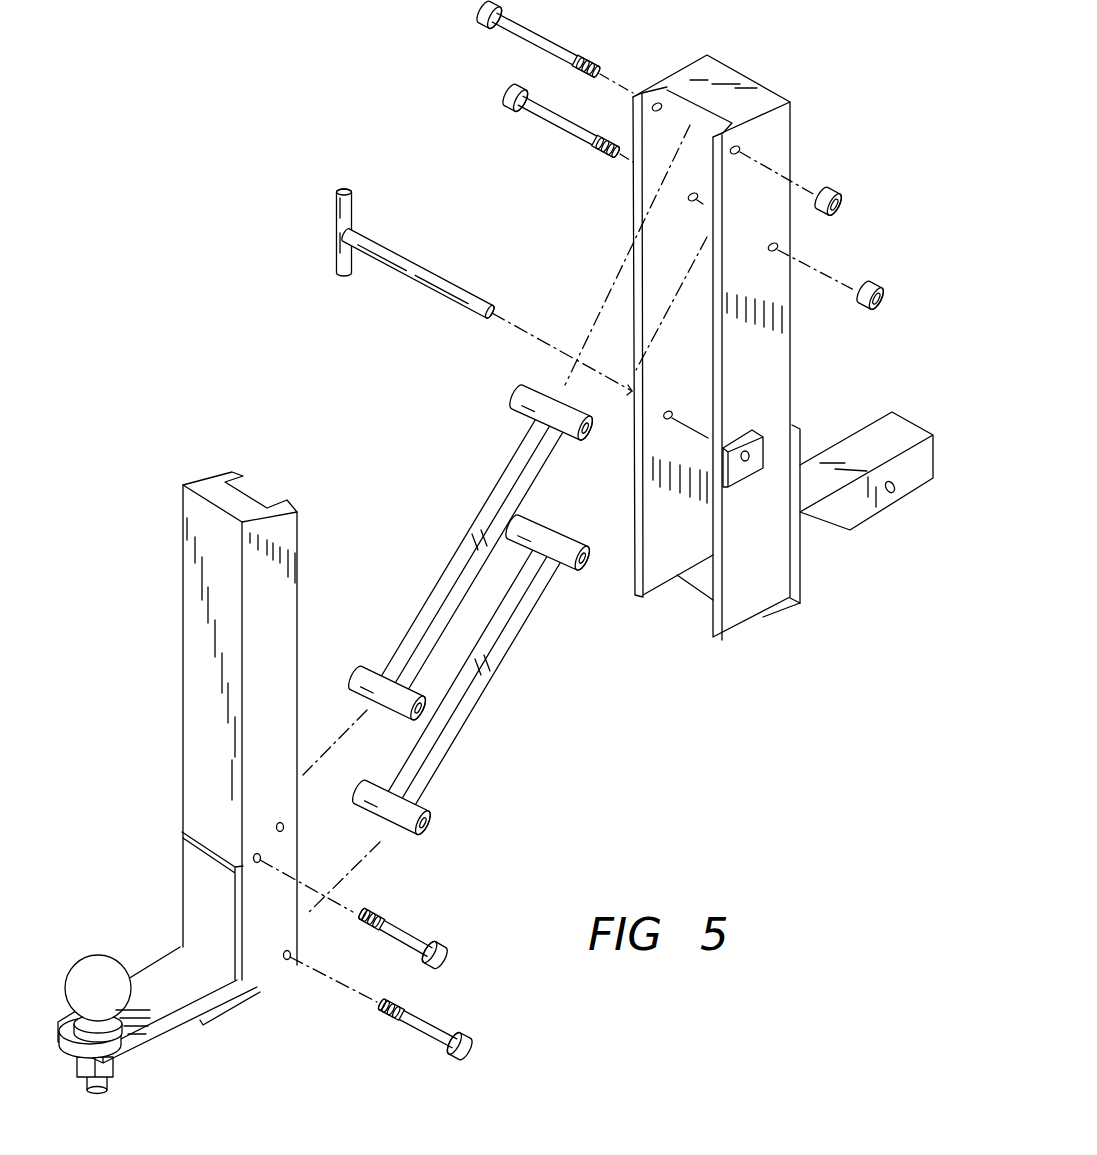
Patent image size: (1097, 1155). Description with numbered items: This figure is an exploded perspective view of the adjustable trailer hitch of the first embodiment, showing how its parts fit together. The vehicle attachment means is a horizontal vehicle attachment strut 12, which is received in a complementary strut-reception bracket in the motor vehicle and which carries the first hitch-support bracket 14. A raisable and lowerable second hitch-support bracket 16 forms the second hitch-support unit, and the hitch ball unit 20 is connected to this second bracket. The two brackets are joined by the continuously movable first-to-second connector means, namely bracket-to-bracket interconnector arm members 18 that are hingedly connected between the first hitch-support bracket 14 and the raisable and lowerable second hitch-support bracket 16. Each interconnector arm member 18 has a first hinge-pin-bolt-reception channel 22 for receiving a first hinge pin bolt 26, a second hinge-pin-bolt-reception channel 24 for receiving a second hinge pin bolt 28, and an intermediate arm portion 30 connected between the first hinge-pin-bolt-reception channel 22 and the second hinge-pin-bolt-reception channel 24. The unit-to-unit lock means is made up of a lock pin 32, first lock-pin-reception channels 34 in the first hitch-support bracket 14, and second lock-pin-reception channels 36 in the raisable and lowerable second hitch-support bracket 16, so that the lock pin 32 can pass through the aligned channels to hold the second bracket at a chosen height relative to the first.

The horizontal vehicle attachment strut 12 is at (883, 448).
The first hitch-support bracket 14 is at (775, 147).
The raisable and lowerable second hitch-support bracket 16 is at (220, 597).
The bracket-to-bracket interconnector arm members 18 is at (487, 485).
The hitch ball unit 20 is at (118, 953).
The first hinge-pin-bolt-reception channel 22 is at (517, 398).
The second hinge-pin-bolt-reception channel 24 is at (370, 673).
The first hinge pin bolt 26 is at (537, 113).
The second hinge pin bolt 28 is at (437, 1023).
The intermediate arm portion 30 is at (446, 568).
The lock pin 32 is at (427, 270).
The first lock-pin-reception channels 34 is at (668, 410).
The second lock-pin-reception channels 36 is at (278, 828).